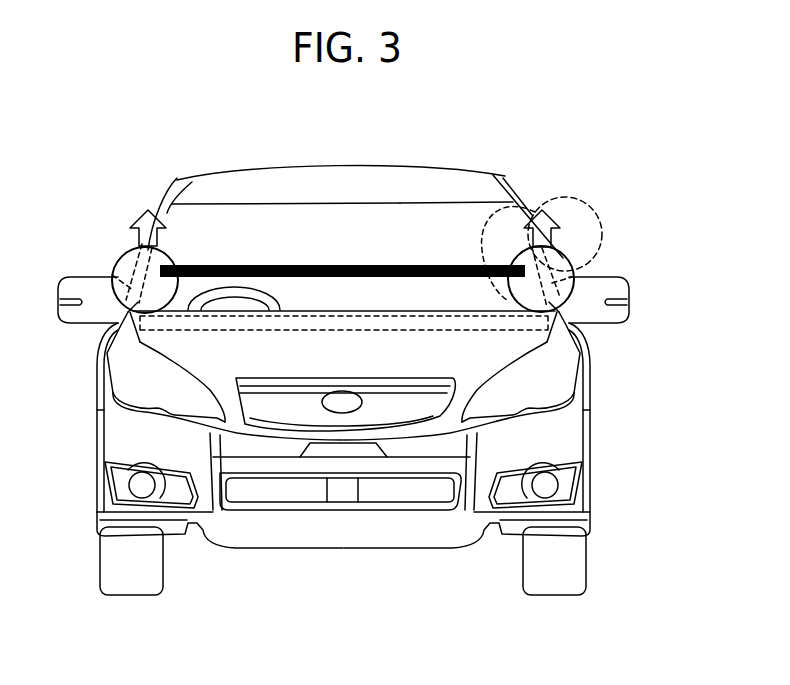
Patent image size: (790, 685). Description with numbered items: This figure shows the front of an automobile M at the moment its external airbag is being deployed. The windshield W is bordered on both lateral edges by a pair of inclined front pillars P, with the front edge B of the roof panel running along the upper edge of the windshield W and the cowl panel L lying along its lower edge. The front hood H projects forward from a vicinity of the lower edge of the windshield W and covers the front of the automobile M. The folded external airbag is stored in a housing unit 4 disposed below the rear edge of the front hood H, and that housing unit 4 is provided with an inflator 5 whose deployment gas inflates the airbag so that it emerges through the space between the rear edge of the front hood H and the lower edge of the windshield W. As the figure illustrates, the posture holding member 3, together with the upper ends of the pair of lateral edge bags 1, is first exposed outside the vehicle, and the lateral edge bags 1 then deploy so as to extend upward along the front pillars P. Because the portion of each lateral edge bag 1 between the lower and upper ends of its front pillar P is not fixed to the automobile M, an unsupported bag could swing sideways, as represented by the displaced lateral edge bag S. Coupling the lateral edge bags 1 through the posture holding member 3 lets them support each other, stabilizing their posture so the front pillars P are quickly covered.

The lateral edge bag 1 is at (560, 258).
The posture holding member 3 is at (457, 263).
The housing unit 4 is at (580, 333).
The inflator 5 is at (340, 322).
The front pillar P is at (165, 208).
The cowl panel L is at (243, 370).
The windshield W is at (265, 212).
The automobile M is at (333, 163).
The front edge of the roof panel B is at (415, 200).
The lateral edge bag moved to the lateral side S is at (603, 230).
The front hood H is at (520, 343).